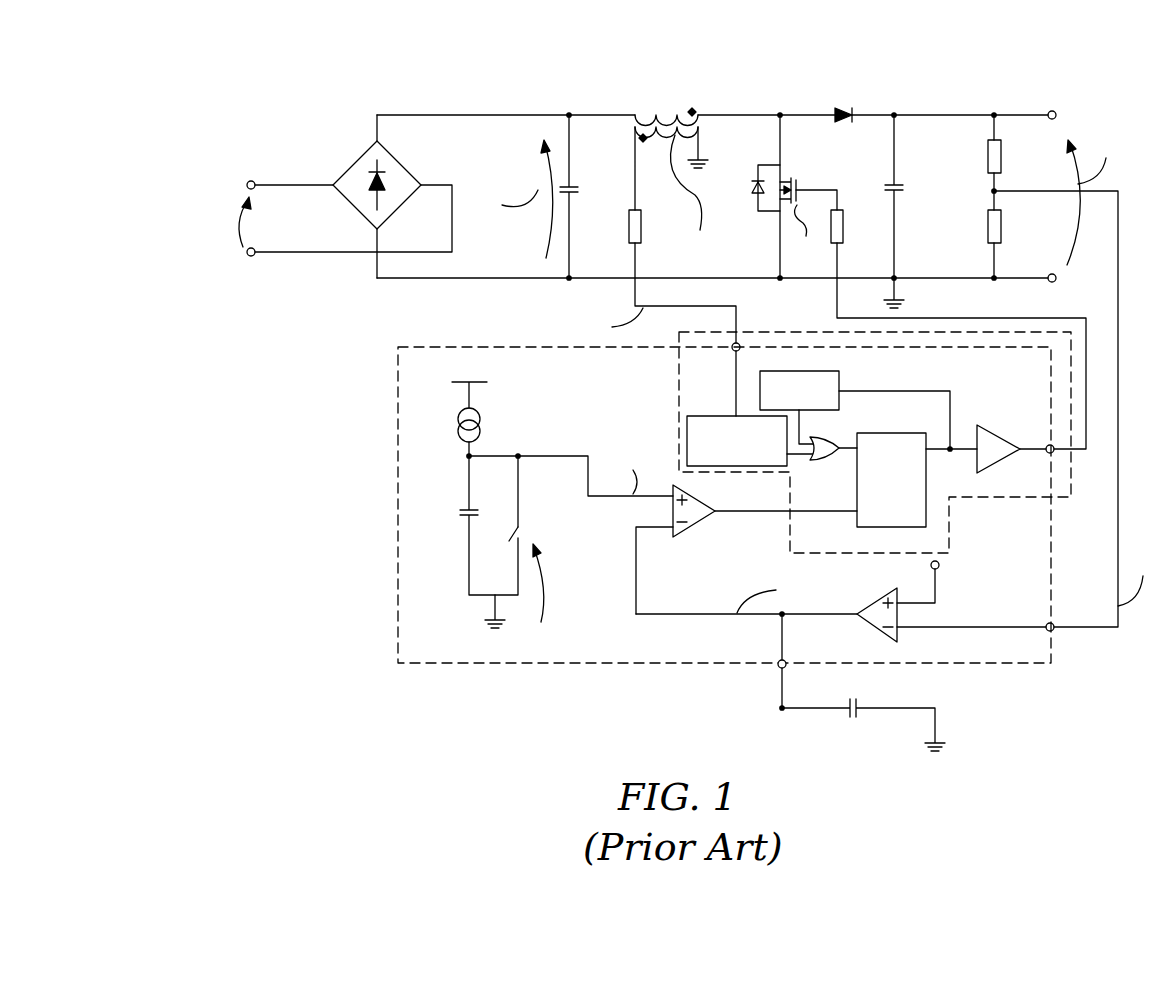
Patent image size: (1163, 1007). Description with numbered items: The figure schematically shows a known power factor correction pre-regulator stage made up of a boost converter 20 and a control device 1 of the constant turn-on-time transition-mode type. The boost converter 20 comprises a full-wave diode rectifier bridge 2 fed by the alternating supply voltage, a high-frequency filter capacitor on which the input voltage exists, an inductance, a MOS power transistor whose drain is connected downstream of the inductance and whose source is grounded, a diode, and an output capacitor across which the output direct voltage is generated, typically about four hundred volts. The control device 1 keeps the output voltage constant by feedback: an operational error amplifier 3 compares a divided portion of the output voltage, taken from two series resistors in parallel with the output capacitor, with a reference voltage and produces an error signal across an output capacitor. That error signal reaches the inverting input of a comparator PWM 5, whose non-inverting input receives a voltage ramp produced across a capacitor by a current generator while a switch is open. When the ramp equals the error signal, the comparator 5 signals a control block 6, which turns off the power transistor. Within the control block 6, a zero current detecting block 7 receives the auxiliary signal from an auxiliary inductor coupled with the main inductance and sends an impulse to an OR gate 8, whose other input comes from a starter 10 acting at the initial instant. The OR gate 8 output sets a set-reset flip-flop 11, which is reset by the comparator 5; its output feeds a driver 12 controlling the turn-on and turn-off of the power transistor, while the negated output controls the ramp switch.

The boost converter 20 is at (546, 75).
The full-wave diode rectifier bridge 2 is at (348, 162).
The control device 1 is at (398, 398).
The operational error amplifier 3 is at (873, 624).
The comparator PWM 5 is at (695, 528).
The control block 6 is at (1071, 392).
The zero current detecting block 7 is at (699, 415).
The OR gate 8 is at (816, 461).
The starter 10 is at (800, 373).
The set-reset flip-flop 11 is at (893, 433).
The driver 12 is at (1004, 440).